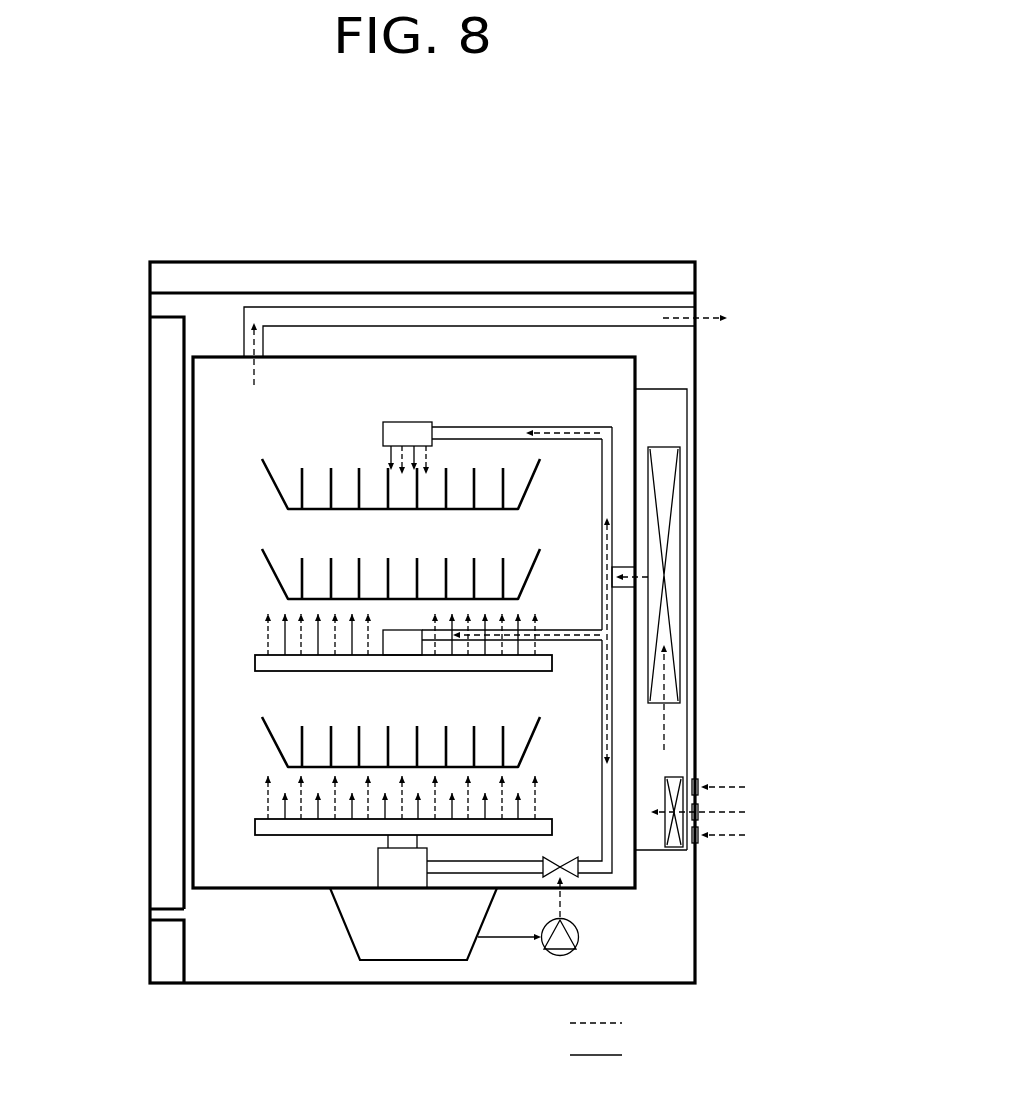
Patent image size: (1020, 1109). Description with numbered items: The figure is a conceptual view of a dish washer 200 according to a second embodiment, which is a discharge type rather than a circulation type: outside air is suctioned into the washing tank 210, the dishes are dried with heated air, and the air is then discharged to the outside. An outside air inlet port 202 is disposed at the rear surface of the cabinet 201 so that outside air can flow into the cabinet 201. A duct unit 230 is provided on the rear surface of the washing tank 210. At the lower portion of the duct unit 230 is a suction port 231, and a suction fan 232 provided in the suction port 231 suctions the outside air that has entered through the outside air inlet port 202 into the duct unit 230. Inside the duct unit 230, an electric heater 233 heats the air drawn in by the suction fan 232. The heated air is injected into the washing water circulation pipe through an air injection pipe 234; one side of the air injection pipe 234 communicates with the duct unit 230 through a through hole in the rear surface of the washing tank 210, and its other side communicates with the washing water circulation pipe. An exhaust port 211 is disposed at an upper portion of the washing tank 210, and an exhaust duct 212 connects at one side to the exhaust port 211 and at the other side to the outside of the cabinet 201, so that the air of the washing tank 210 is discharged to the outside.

The dish washer 200 is at (520, 200).
The cabinet 201 is at (305, 262).
The outside air inlet port 202 is at (700, 790).
The washing tank 210 is at (193, 582).
The exhaust port 211 is at (245, 355).
The exhaust duct 212 is at (402, 307).
The duct unit 230 is at (687, 421).
The suction port 231 is at (691, 773).
The suction fan 232 is at (675, 843).
The electric heater 233 is at (680, 496).
The air injection pipe 234 is at (622, 587).